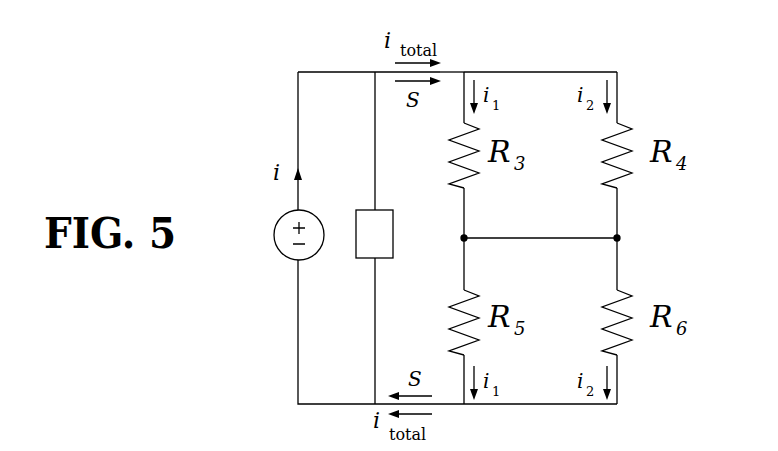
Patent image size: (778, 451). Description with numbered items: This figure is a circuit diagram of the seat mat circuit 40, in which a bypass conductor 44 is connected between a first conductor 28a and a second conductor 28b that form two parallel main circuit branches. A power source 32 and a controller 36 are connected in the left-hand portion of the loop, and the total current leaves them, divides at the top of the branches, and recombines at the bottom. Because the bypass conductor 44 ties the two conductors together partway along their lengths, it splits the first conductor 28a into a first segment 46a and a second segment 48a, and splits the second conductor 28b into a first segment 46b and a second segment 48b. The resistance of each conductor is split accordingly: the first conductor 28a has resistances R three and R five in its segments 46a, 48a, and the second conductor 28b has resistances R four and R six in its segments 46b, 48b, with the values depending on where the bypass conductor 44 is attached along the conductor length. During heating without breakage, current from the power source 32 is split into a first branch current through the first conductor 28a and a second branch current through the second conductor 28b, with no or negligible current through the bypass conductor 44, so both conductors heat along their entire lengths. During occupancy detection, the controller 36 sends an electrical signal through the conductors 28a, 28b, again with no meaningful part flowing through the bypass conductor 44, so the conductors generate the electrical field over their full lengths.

The first conductor 28a is at (467, 60).
The second conductor 28b is at (616, 58).
The power source 32 is at (283, 256).
The controller 36 is at (356, 222).
The circuit 40 is at (648, 55).
The bypass conductor 44 is at (532, 238).
The first segment 46a is at (464, 78).
The first segment 46b is at (617, 94).
The second segment 48a is at (464, 266).
The second segment 48b is at (617, 266).